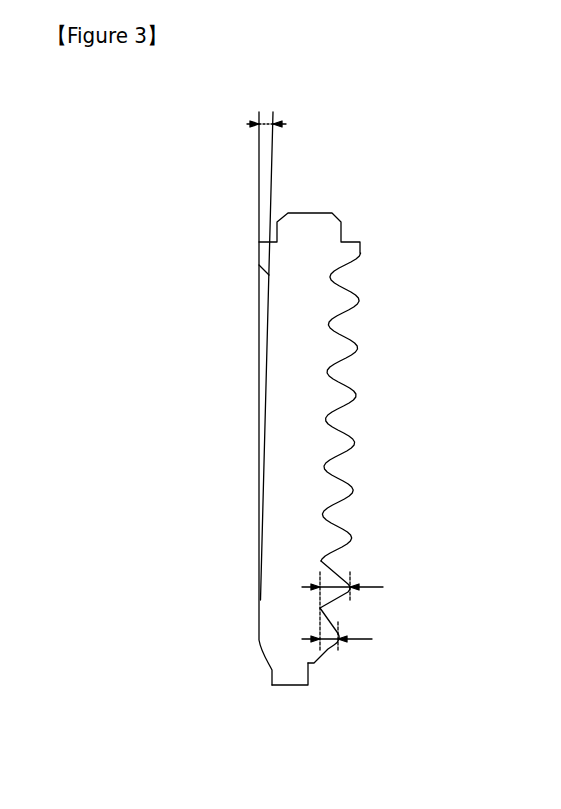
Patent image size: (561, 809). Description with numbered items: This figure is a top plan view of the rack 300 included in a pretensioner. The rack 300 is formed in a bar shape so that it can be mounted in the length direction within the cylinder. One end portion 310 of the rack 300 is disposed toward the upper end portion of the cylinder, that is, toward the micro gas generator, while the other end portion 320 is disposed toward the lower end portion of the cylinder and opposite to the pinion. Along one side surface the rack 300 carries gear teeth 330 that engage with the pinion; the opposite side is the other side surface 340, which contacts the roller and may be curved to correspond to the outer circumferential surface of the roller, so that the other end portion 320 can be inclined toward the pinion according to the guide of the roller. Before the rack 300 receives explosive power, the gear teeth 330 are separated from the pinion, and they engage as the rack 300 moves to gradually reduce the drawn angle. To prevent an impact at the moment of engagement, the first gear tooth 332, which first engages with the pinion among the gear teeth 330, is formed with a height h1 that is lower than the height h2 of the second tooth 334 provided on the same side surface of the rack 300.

The rack 300 is at (185, 172).
The one end portion 310 is at (310, 234).
The other end portion 320 is at (292, 672).
The gear teeth 330 is at (447, 562).
The first gear tooth 332 is at (338, 654).
The second tooth 334 is at (342, 578).
The other side surface 340 is at (265, 382).
The height of first gear tooth h1 is at (337, 634).
The height of second tooth h2 is at (342, 607).